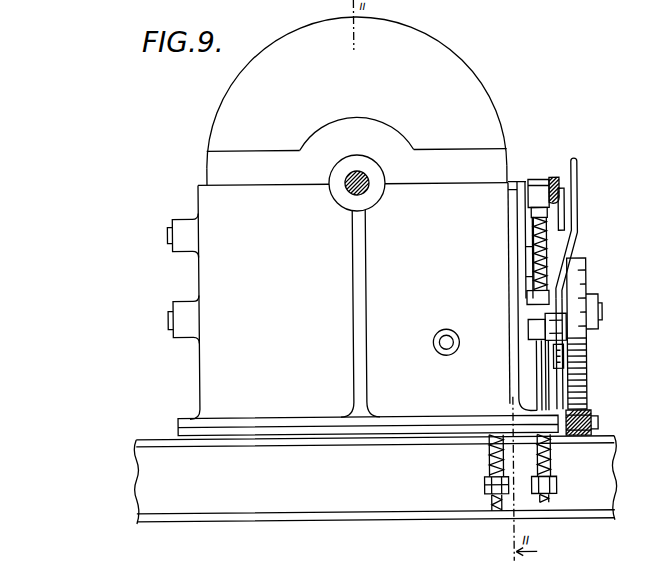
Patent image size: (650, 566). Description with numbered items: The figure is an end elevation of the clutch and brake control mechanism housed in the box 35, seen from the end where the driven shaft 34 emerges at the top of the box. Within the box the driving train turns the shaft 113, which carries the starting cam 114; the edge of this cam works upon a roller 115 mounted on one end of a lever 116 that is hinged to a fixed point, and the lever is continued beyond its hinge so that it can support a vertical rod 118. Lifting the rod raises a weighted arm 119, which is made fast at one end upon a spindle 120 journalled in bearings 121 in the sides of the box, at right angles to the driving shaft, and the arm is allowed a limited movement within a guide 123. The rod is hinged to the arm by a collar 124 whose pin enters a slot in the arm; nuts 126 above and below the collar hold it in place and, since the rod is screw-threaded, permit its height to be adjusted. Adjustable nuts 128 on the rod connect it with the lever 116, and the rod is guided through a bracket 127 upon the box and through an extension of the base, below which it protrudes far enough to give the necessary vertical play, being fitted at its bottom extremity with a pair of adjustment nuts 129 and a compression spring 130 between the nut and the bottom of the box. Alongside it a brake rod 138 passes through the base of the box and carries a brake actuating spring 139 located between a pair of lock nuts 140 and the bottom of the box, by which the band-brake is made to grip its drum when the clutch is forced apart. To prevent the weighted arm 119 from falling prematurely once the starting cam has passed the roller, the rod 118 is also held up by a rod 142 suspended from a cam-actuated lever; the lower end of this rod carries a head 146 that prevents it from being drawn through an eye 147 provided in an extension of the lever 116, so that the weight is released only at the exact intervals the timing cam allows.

The box 35 is at (243, 106).
The driven shaft 34 is at (360, 167).
The bearings 121 is at (187, 232).
The spindle 120 is at (167, 233).
The shaft 113 is at (167, 322).
The nuts 126 is at (540, 178).
The collar 124 is at (529, 197).
The weighted arm 119 is at (533, 228).
The rod 142 is at (579, 190).
The guide 123 is at (566, 215).
The bracket 127 is at (523, 300).
The eye 147 is at (577, 296).
The adjustable nuts 128 is at (529, 326).
The head 146 is at (566, 335).
The starting cam 114 is at (578, 380).
The lever 116 is at (560, 393).
The roller 115 is at (578, 426).
The vertical rod 118 is at (540, 395).
The brake actuating spring 139 is at (486, 448).
The brake rod 138 is at (488, 466).
The lock nuts 140 is at (483, 493).
The compression spring 130 is at (552, 460).
The adjustment nuts 129 is at (555, 487).